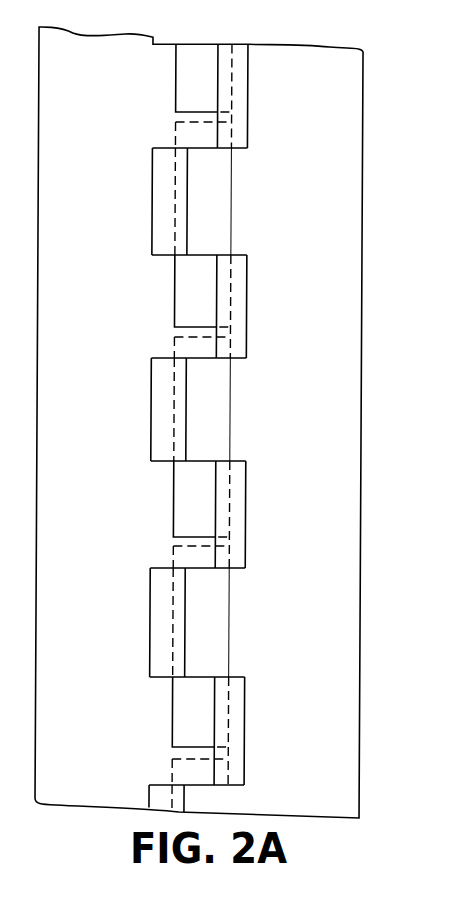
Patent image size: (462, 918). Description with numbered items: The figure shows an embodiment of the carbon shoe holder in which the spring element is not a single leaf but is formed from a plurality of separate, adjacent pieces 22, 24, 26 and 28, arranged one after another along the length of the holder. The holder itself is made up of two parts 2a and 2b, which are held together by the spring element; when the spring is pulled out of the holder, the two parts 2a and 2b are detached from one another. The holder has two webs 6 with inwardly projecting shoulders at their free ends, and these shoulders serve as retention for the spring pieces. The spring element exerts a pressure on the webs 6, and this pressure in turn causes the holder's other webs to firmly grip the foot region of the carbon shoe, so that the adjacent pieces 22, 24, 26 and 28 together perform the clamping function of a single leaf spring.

The holder part 2a is at (298, 448).
The holder part 2b is at (153, 515).
The web 6 is at (160, 433).
The spring piece 22 is at (228, 98).
The spring piece 24 is at (225, 225).
The spring piece 26 is at (215, 405).
The spring piece 28 is at (212, 625).